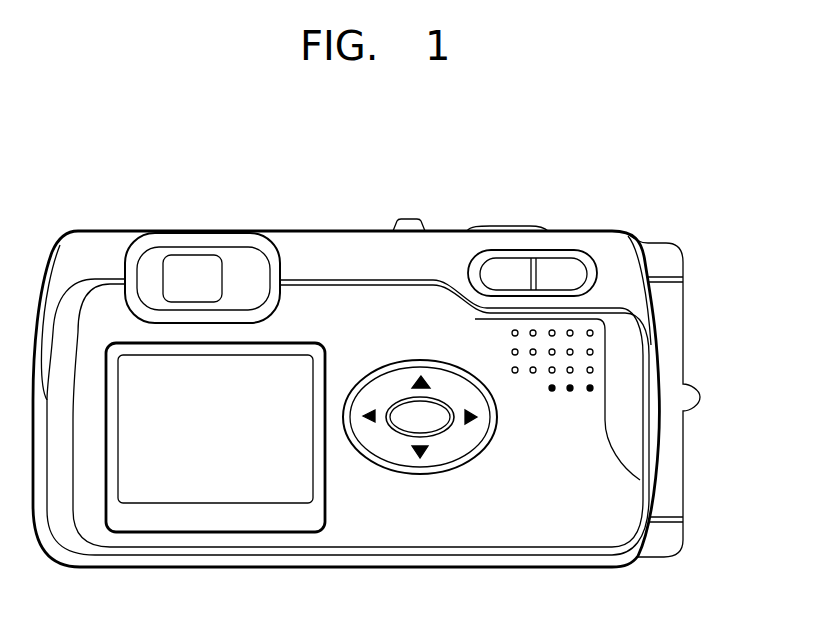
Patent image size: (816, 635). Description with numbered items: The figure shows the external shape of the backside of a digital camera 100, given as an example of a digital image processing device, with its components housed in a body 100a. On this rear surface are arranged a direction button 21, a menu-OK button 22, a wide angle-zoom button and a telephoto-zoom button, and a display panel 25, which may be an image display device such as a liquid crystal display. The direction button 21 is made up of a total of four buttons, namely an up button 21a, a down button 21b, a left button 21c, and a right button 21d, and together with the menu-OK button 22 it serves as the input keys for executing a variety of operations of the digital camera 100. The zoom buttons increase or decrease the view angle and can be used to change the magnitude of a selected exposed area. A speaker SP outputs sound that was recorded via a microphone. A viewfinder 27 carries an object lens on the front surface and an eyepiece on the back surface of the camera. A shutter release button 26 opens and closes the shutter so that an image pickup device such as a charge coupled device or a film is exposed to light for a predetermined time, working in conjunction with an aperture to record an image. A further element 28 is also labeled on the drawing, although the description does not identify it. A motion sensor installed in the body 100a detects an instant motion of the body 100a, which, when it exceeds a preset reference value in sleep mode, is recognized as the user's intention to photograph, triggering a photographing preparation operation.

The digital camera 100 is at (672, 190).
The body 100a is at (686, 304).
The direction button 21 is at (443, 464).
The up button 21a is at (422, 377).
The down button 21b is at (422, 458).
The left button 21c is at (373, 410).
The right button 21d is at (480, 414).
The menu-OK button 22 is at (443, 430).
The display panel 25 is at (210, 485).
The shutter release button 26 is at (507, 228).
The viewfinder 27 is at (192, 267).
The power button 28 is at (408, 218).
The speaker SP is at (594, 388).